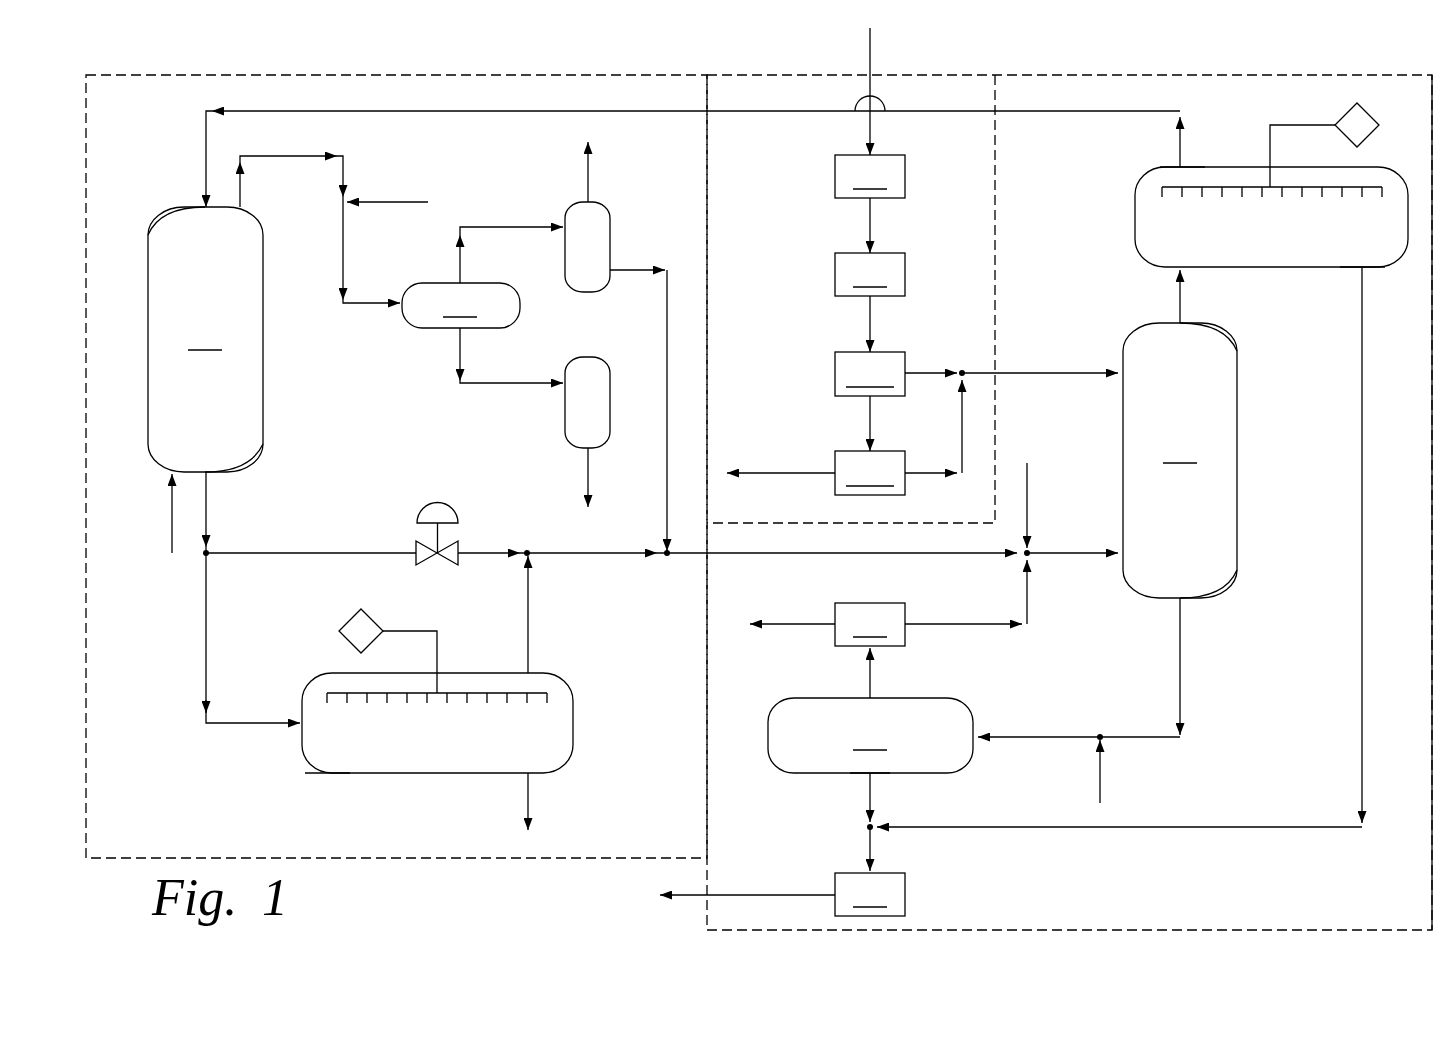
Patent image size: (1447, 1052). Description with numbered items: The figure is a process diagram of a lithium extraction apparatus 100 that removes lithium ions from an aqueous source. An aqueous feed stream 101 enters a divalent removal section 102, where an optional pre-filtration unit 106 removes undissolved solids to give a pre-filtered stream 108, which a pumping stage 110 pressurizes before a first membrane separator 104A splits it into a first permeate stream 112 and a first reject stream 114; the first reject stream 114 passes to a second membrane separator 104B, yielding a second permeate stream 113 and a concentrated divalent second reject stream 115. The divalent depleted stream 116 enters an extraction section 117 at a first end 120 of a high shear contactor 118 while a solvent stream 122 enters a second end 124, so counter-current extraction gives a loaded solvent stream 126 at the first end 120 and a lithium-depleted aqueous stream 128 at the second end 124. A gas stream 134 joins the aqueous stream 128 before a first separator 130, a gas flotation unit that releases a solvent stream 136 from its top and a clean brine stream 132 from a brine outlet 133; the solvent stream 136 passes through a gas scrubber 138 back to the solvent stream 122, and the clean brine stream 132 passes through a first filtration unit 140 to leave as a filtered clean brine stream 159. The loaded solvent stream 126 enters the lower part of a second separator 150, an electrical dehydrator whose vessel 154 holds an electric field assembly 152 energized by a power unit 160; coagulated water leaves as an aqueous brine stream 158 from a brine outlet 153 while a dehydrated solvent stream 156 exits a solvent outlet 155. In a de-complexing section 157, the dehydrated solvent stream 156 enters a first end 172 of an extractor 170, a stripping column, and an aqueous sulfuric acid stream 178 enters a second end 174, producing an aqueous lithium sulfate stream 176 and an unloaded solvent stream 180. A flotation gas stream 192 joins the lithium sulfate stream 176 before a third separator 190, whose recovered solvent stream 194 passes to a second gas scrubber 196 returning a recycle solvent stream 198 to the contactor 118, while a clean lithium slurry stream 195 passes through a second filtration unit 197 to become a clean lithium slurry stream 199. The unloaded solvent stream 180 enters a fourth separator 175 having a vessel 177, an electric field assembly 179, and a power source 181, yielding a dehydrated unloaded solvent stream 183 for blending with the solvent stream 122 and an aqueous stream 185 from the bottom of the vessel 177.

The lithium extraction apparatus 100 is at (208, 60).
The aqueous feed stream 101 is at (868, 47).
The divalent removal section 102 is at (968, 85).
The first membrane separator 104A is at (870, 374).
The second membrane separator 104B is at (870, 473).
The pre-filtration unit 106 is at (870, 176).
The pre-filtered stream 108 is at (871, 222).
The pumping stage 110 is at (870, 302).
The first permeate stream 112 is at (925, 372).
The second permeate stream 113 is at (926, 472).
The first reject stream 114 is at (869, 420).
The second reject stream 115 is at (772, 472).
The divalent depleted stream 116 is at (1083, 376).
The extraction section 117 is at (1395, 85).
The contactor 118 is at (1180, 460).
The first end 120 is at (1235, 340).
The solvent stream 122 is at (1028, 498).
The second end 124 is at (1235, 580).
The loaded solvent stream 126 is at (1179, 300).
The lithium-depleted aqueous stream 128 is at (1181, 663).
The first separator 130 is at (870, 735).
The clean brine stream 132 is at (869, 799).
The brine outlet 133 is at (871, 775).
The gas stream 134 is at (1101, 778).
The solvent stream 136 is at (869, 677).
The gas scrubber 138 is at (888, 603).
The first filtration unit 140 is at (870, 894).
The second separator 150 is at (1140, 257).
The electric field assembly 152 is at (1160, 187).
The brine outlet 153 is at (1362, 267).
The vessel 154 is at (1378, 270).
The solvent outlet 155 is at (1182, 167).
The dehydrated solvent stream 156 is at (1105, 115).
The de-complexing section 157 is at (678, 85).
The aqueous brine stream 158 is at (1362, 453).
The filtered clean brine stream 159 is at (777, 894).
The power unit 160 is at (1340, 115).
The extractor 170 is at (205, 339).
The first end 172 is at (160, 218).
The second end 174 is at (257, 460).
The fourth separator 175 is at (575, 718).
The aqueous lithium sulfate stream 176 is at (243, 195).
The vessel 177 is at (322, 773).
The aqueous sulfuric acid stream 178 is at (171, 524).
The electric field assembly 179 is at (326, 693).
The unloaded solvent stream 180 is at (207, 513).
The power source 181 is at (340, 617).
The dehydrated unloaded solvent stream 183 is at (529, 607).
The aqueous stream 185 is at (529, 800).
The third separator 190 is at (461, 305).
The flotation gas stream 192 is at (393, 200).
The recovered solvent stream 194 is at (506, 226).
The clean lithium slurry stream 195 is at (458, 356).
The second gas scrubber 196 is at (612, 226).
The second filtration unit 197 is at (565, 418).
The recycle solvent stream 198 is at (666, 325).
The clean lithium slurry stream 199 is at (587, 475).